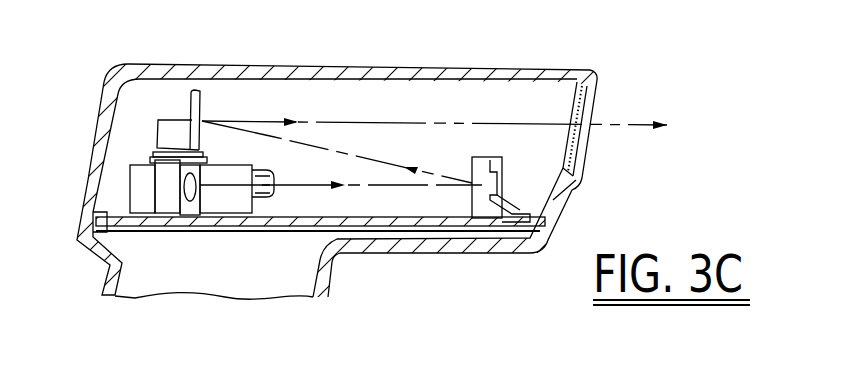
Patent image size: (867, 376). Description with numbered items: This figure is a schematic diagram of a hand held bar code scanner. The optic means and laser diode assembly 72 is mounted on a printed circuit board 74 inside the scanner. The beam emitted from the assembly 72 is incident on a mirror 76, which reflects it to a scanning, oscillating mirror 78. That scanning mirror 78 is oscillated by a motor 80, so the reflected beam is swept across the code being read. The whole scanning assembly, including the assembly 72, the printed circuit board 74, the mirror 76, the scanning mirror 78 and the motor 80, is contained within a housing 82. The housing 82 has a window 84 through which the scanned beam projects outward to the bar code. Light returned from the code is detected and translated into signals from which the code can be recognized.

The optic means and laser diode assembly 72 is at (233, 207).
The printed circuit board 74 is at (418, 222).
The mirror 76 is at (507, 178).
The scanning, oscillating mirror 78 is at (201, 108).
The motor 80 is at (147, 187).
The housing 82 is at (476, 63).
The window 84 is at (577, 110).